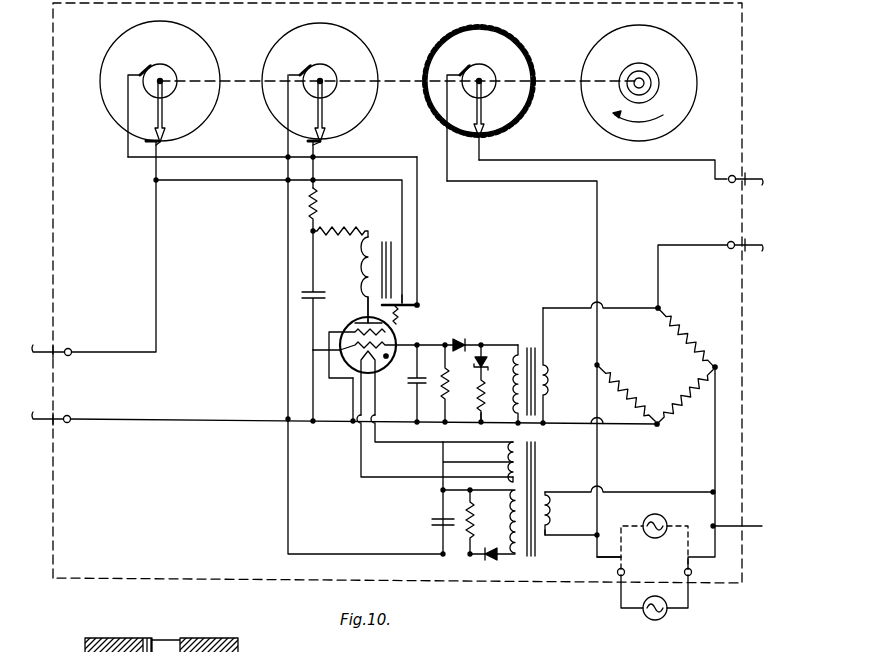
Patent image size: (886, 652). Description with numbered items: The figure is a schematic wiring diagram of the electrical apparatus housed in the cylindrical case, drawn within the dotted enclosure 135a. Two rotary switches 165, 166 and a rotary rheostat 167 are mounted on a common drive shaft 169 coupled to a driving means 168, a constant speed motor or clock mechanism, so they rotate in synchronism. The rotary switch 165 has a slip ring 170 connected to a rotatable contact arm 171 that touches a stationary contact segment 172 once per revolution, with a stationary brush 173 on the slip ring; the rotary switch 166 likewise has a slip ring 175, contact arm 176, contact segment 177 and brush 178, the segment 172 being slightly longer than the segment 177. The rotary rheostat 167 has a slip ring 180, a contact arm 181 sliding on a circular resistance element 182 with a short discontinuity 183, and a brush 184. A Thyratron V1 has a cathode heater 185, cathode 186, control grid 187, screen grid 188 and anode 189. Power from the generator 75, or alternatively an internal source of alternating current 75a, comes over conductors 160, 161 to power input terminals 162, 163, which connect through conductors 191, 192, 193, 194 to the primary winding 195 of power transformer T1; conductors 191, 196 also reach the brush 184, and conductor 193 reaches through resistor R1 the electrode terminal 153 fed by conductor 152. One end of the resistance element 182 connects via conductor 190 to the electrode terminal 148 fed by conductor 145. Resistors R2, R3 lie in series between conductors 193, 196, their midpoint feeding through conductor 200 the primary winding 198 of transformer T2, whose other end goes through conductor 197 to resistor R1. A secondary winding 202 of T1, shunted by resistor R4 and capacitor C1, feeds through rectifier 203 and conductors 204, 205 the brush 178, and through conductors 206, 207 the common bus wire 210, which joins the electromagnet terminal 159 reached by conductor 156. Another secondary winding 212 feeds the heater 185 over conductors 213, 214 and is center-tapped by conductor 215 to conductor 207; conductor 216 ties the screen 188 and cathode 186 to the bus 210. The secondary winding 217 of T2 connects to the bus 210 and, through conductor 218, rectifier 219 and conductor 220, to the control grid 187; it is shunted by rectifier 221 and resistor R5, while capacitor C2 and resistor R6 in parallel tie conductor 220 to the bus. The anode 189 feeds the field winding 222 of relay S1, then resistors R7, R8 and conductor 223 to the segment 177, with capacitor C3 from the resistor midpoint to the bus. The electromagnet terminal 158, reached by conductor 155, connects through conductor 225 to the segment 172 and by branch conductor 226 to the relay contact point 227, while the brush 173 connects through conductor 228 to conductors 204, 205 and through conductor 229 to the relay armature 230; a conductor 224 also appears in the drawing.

The dotted enclosure 135a is at (139, 578).
The rotary switch 165 is at (208, 36).
The rotary switch 166 is at (360, 40).
The rotary rheostat 167 is at (517, 38).
The driving means 168 is at (694, 47).
The common drive shaft 169 is at (228, 80).
The slip ring 170 is at (177, 70).
The rotatable contact arm 171 is at (164, 108).
The stationary contact segment 172 is at (147, 157).
The stationary brush 173 is at (150, 64).
The slip ring 175 is at (335, 72).
The rotatable contact arm 176 is at (324, 108).
The stationary contact segment 177 is at (316, 144).
The stationary brush 178 is at (310, 64).
The slip ring 180 is at (495, 72).
The rotatable contact arm 181 is at (483, 108).
The circular resistance element 182 is at (533, 72).
The discontinuity 183 is at (489, 142).
The stationary brush 184 is at (470, 66).
The cathode heater 185 is at (384, 367).
The cathode 186 is at (356, 375).
The control grid 187 is at (313, 352).
The screen grid 188 is at (354, 330).
The anode 189 is at (390, 306).
The conductor 190 is at (636, 162).
The conductor 191 is at (604, 556).
The conductor 192 is at (583, 535).
The conductor 193 is at (733, 468).
The conductor 194 is at (661, 492).
The primary winding 195 is at (553, 512).
The conductor 196 is at (599, 226).
The conductor 197 is at (563, 304).
The primary winding 198 is at (549, 385).
The conductor 200 is at (621, 426).
The secondary winding 202 is at (512, 523).
The rectifier 203 is at (490, 562).
The conductor 204 is at (286, 512).
The conductor 205 is at (288, 108).
The conductor 206 is at (492, 496).
The conductor 207 is at (440, 461).
The common bus wire 210 is at (191, 417).
The secondary winding 212 is at (523, 460).
The conductor 213 is at (388, 444).
The conductor 214 is at (389, 478).
The conductor 215 is at (458, 470).
The conductor 216 is at (353, 405).
The secondary winding 217 is at (484, 414).
The conductor 218 is at (501, 348).
The rectifier 219 is at (465, 342).
The conductor 220 is at (431, 343).
The rectifier 221 is at (476, 368).
The field winding 222 is at (360, 256).
The conductor 223 is at (325, 168).
The conductor 224 is at (308, 392).
The conductor 225 is at (158, 272).
The branch conductor connection 226 is at (225, 180).
The contact point 227 is at (402, 299).
The conductor 228 is at (183, 157).
The conductor 229 is at (382, 157).
The armature 230 is at (418, 305).
The conductor 145 is at (754, 174).
The terminal 148 is at (730, 182).
The conductor 152 is at (760, 250).
The terminal 153 is at (728, 242).
The insulated electrical conductor 155 is at (30, 359).
The insulated electrical conductor 156 is at (33, 423).
The terminal 158 is at (74, 349).
The terminal 159 is at (71, 424).
The insulated conductor 160 is at (620, 595).
The insulated conductor 161 is at (690, 598).
The power input terminal 162 is at (617, 572).
The power input terminal 163 is at (692, 572).
The generator 75 is at (664, 620).
The source of alternating current 75a is at (657, 516).
The resistor R1 is at (674, 336).
The resistor R2 is at (634, 377).
The resistor R3 is at (686, 402).
The resistor R4 is at (458, 522).
The resistor R5 is at (481, 394).
The resistor R6 is at (445, 383).
The resistor R7 is at (332, 232).
The resistor R8 is at (320, 210).
The capacitor C1 is at (432, 518).
The capacitor C2 is at (407, 383).
The capacitor C3 is at (307, 290).
The electromagnetic relay S1 is at (393, 265).
The power transformer T1 is at (535, 499).
The transformer T2 is at (548, 363).
The Thyratron V1 is at (358, 359).